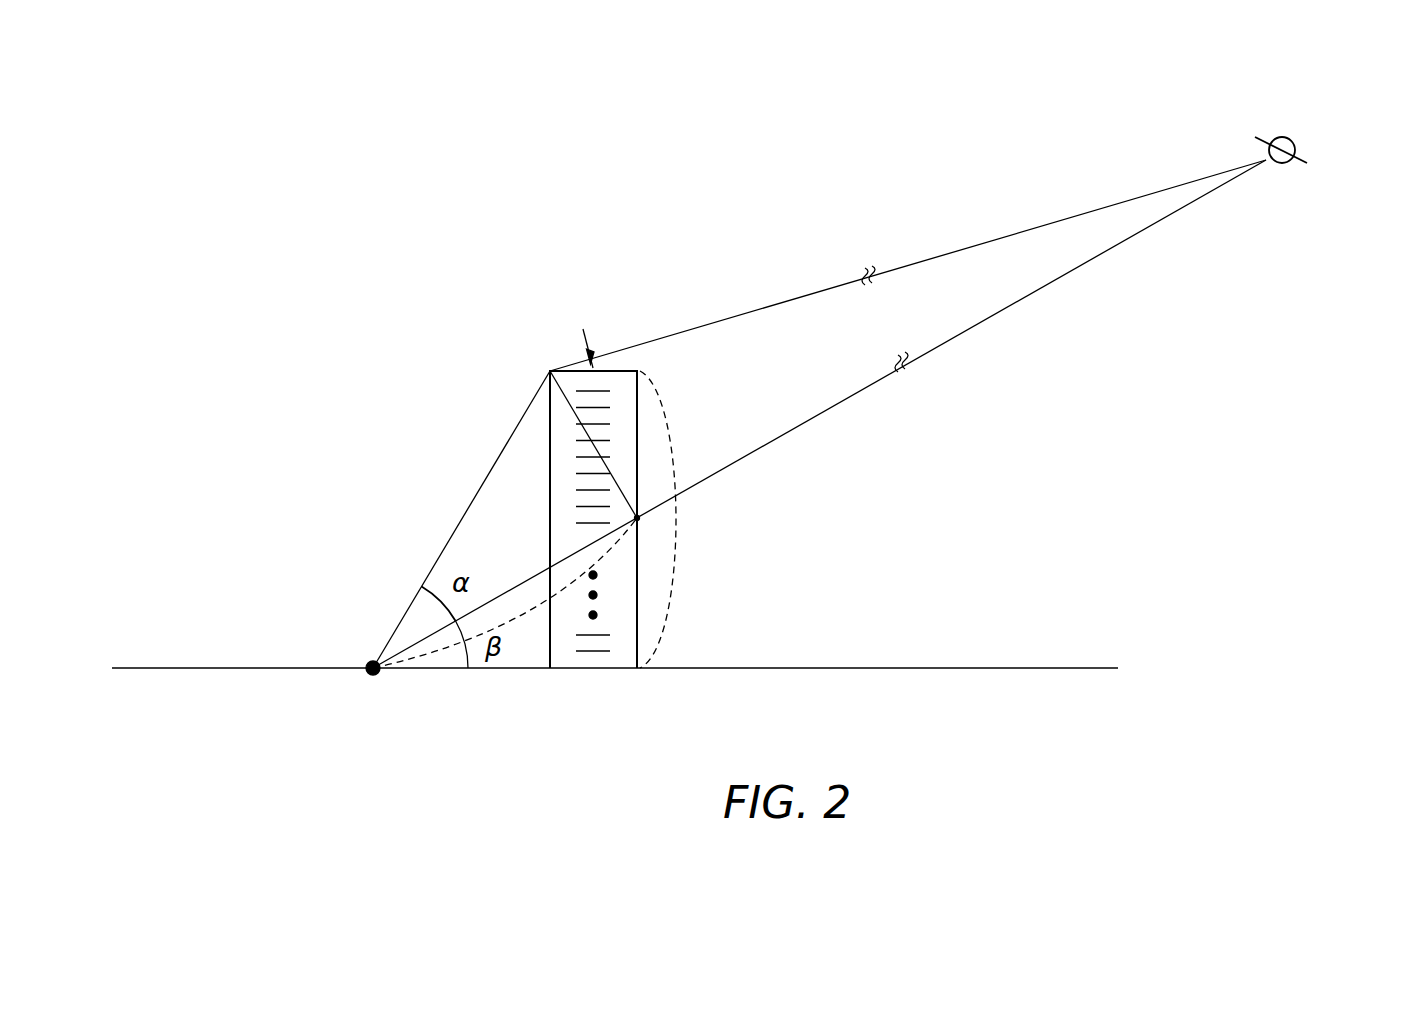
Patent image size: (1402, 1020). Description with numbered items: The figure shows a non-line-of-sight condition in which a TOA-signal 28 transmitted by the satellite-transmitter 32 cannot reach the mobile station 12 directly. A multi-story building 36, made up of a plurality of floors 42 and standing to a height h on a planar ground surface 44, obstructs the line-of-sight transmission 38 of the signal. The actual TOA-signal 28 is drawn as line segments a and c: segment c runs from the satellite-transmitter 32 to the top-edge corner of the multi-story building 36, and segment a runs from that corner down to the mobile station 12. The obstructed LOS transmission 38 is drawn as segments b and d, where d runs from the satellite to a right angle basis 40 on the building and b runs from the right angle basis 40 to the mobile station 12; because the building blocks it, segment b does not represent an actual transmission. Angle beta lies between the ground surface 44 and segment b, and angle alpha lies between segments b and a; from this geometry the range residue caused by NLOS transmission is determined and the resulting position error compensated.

The mobile station 12 is at (371, 661).
The TOA-signal 28 is at (449, 540).
The satellite-transmitter 32 is at (1284, 137).
The multi-story building 36 is at (621, 371).
The LOS transmission 38 is at (765, 445).
The right angle basis 40 is at (640, 519).
The floors 42 is at (593, 652).
The ground surface 44 is at (770, 665).